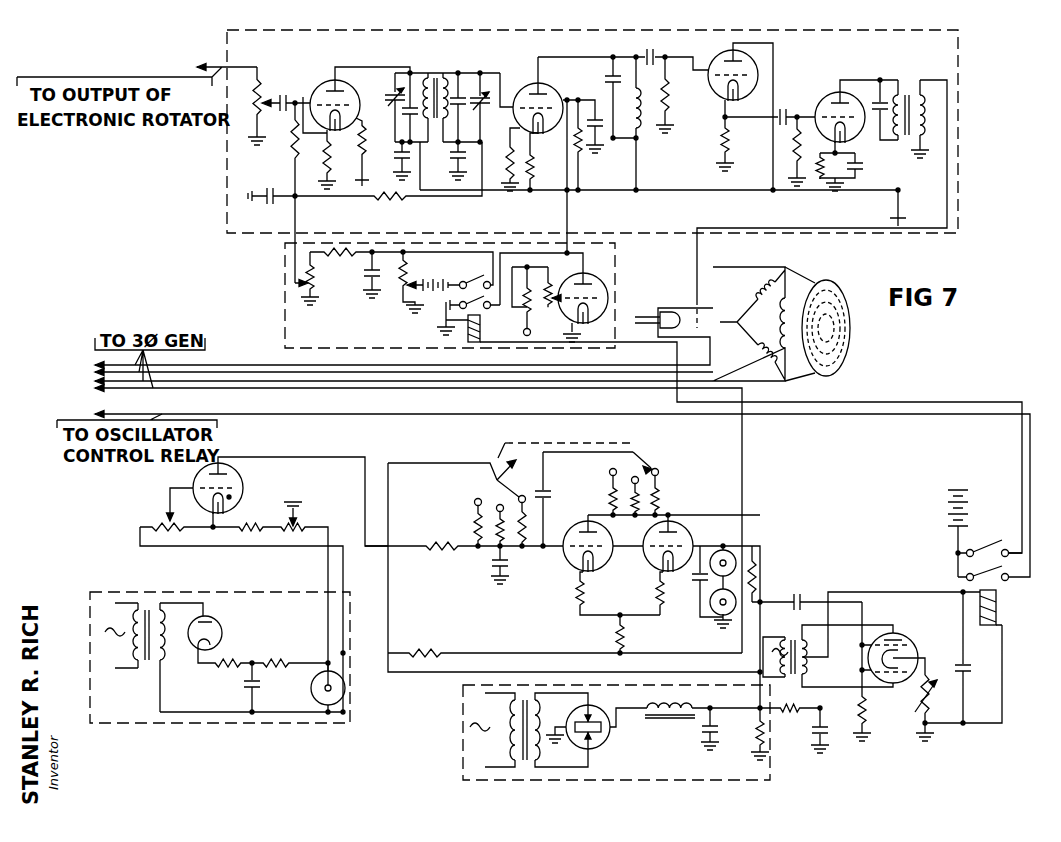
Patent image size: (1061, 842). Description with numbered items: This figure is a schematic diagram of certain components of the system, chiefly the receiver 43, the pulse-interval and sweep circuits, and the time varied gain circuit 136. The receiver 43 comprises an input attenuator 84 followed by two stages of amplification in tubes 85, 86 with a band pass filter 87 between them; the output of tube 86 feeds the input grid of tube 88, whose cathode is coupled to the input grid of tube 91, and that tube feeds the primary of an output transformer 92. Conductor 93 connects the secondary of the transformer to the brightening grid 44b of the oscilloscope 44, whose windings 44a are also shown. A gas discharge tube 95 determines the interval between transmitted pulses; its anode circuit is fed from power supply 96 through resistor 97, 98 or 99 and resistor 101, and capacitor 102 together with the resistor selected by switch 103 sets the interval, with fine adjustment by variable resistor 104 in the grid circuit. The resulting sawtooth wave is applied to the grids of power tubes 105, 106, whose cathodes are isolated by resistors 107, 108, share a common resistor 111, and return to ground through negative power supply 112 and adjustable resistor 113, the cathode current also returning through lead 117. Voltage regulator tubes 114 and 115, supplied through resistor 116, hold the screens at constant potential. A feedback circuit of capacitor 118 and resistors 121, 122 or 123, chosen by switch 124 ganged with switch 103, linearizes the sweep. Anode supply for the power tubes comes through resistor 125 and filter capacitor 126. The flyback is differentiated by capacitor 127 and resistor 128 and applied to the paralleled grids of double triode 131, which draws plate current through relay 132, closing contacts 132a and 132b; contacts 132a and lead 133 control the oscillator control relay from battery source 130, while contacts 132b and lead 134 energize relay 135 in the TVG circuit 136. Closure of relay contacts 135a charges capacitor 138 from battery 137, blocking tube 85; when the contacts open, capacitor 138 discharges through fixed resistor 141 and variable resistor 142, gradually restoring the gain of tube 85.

The receiver 43 is at (227, 178).
The input attenuator 84 is at (262, 82).
The amplifier tube 85 is at (322, 78).
The amplifier tube 86 is at (526, 86).
The band pass filter 87 is at (438, 72).
The tube 88 is at (709, 85).
The tube 91 is at (813, 106).
The output transformer 92 is at (910, 88).
The conductor 93 is at (818, 228).
The TVG circuit 136 is at (285, 318).
The fixed resistor 141 is at (354, 255).
The variable resistor 142 is at (294, 283).
The capacitor 138 is at (365, 280).
The battery 137 is at (432, 282).
The relay contacts 135a is at (473, 282).
The relay 135 is at (465, 338).
The oscilloscope 44 is at (836, 376).
The motor windings 44a is at (750, 298).
The brightening grid 44b is at (692, 306).
The lead 134 is at (932, 402).
The lead 133 is at (866, 417).
The gas discharge tube 95 is at (243, 489).
The variable resistor 104 is at (159, 522).
The adjustable resistor 113 is at (303, 512).
The negative power supply 112 is at (270, 725).
The lead 117 is at (743, 456).
The resistor 101 is at (442, 560).
The resistor 97 is at (474, 516).
The resistor 98 is at (494, 528).
The resistor 99 is at (534, 533).
The capacitor 102 is at (508, 565).
The switch 103 is at (495, 481).
The capacitor 118 is at (584, 499).
The switch 124 is at (640, 461).
The resistor 121 is at (608, 495).
The resistor 122 is at (641, 509).
The resistor 123 is at (661, 496).
The power tube 105 is at (596, 554).
The power tube 106 is at (660, 551).
The resistor 107 is at (578, 592).
The resistor 108 is at (662, 596).
The common resistor 111 is at (613, 645).
The voltage regulator tube 114 is at (735, 558).
The voltage regulator tube 115 is at (716, 622).
The resistor 116 is at (757, 577).
The capacitor 127 is at (807, 595).
The power supply 96 is at (463, 752).
The resistor 125 is at (795, 721).
The filter capacitor 126 is at (827, 745).
The resistor 128 is at (866, 713).
The double triode 131 is at (907, 636).
The relay 132 is at (1000, 609).
The battery source 130 is at (948, 518).
The relay contacts 132a is at (966, 567).
The relay contacts 132b is at (984, 544).